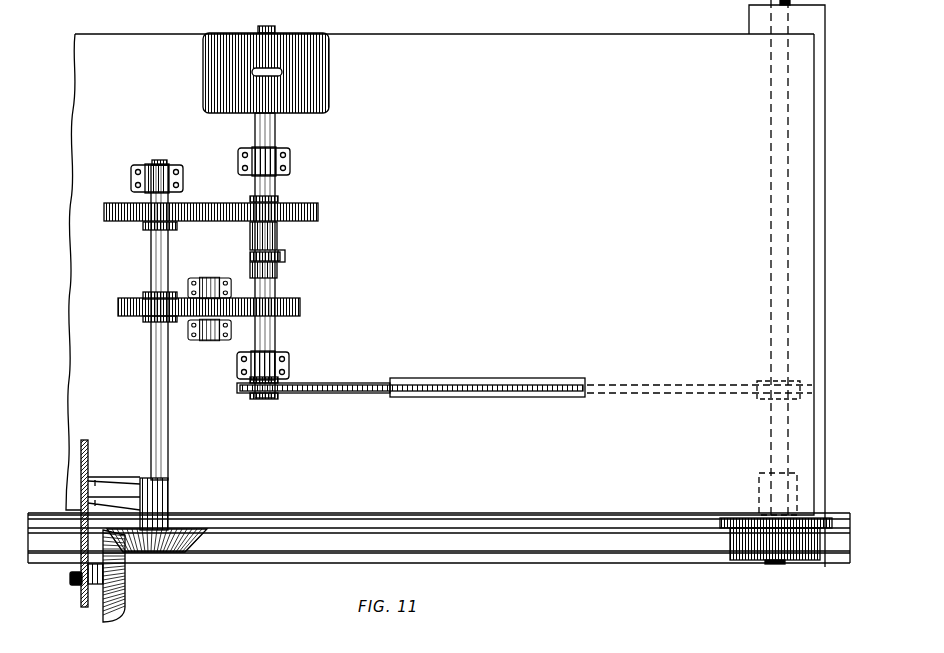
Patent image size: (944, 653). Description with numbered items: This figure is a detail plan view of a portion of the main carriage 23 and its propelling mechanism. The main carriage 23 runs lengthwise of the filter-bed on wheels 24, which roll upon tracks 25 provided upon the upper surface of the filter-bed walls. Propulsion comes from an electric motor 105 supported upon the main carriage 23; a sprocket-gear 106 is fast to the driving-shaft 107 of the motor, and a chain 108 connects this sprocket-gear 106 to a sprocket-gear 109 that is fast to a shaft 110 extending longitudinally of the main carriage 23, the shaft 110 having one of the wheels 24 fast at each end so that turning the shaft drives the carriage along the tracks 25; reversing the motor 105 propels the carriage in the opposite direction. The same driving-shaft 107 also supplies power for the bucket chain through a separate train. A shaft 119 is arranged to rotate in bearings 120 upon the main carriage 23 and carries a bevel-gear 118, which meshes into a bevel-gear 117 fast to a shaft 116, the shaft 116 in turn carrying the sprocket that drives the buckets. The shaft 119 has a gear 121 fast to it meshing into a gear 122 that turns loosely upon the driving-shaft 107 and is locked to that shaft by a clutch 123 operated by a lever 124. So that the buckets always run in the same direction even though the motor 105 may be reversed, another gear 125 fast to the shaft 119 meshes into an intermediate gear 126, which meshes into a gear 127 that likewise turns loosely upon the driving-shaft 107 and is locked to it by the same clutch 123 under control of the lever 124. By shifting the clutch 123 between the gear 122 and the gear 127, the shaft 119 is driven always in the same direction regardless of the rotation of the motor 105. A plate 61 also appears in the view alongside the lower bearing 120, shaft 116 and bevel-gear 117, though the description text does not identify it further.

The electric motor 105 is at (328, 82).
The driving-shaft 107 is at (268, 133).
The bearings 120 is at (160, 173).
The gear 122 is at (318, 213).
The gear 121 is at (125, 226).
The lever 124 is at (284, 255).
The clutch 123 is at (278, 282).
The gear 127 is at (300, 313).
The gear 125 is at (124, 320).
The intermediate gear 126 is at (200, 340).
The chain 108 is at (330, 382).
The sprocket-gear 106 is at (262, 400).
The shaft 119 is at (160, 445).
The plate 61 is at (81, 462).
The bevel-gear 118 is at (185, 552).
The bevel-gear 117 is at (126, 602).
The shaft 116 is at (76, 586).
The main carriage 23 is at (582, 468).
The tracks 25 is at (582, 548).
The wheels 24 is at (765, 548).
The shaft 110 is at (770, 240).
The sprocket-gear 109 is at (764, 381).